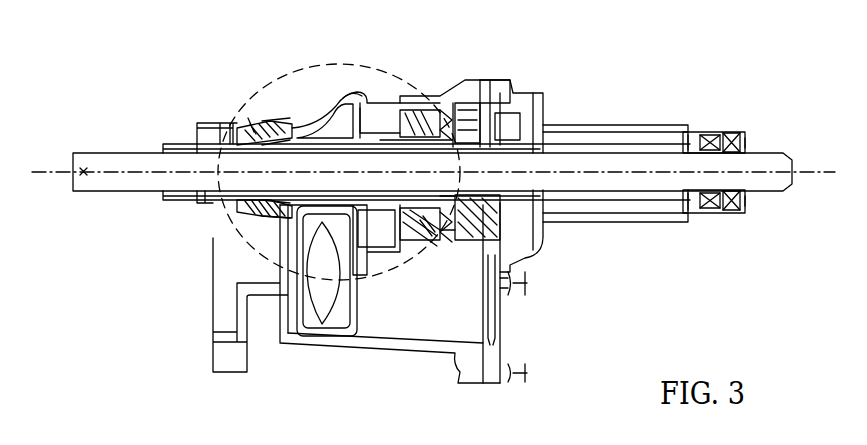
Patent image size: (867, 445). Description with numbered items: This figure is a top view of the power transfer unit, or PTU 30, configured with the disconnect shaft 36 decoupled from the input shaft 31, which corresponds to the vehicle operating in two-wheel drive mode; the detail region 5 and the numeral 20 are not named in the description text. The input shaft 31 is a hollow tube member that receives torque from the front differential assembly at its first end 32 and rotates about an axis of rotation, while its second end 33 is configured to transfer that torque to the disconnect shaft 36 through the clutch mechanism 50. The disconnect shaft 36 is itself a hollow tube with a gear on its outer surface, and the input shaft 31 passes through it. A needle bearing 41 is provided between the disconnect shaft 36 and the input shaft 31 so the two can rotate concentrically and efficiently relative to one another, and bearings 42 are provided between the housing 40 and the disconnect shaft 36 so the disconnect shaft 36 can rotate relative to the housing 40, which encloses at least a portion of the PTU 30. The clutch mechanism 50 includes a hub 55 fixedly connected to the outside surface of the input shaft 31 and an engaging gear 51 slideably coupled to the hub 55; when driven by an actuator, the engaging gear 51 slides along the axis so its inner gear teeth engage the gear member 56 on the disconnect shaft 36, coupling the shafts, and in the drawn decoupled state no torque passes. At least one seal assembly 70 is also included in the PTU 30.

The sectional detail region 5 is at (397, 77).
The shaft 20 is at (122, 165).
The PTU 30 is at (645, 92).
The input shaft 31 is at (186, 203).
The first end 32 is at (189, 147).
The second end 33 is at (507, 148).
The disconnect shaft 36 is at (370, 112).
The housing 40 is at (378, 96).
The needle bearing 41 is at (243, 201).
The bearings 42 is at (276, 120).
The clutch mechanism 50 is at (503, 227).
The engaging gear 51 is at (477, 112).
The hub 55 is at (497, 140).
The gear member 56 is at (455, 238).
The seal assembly 70 is at (249, 118).